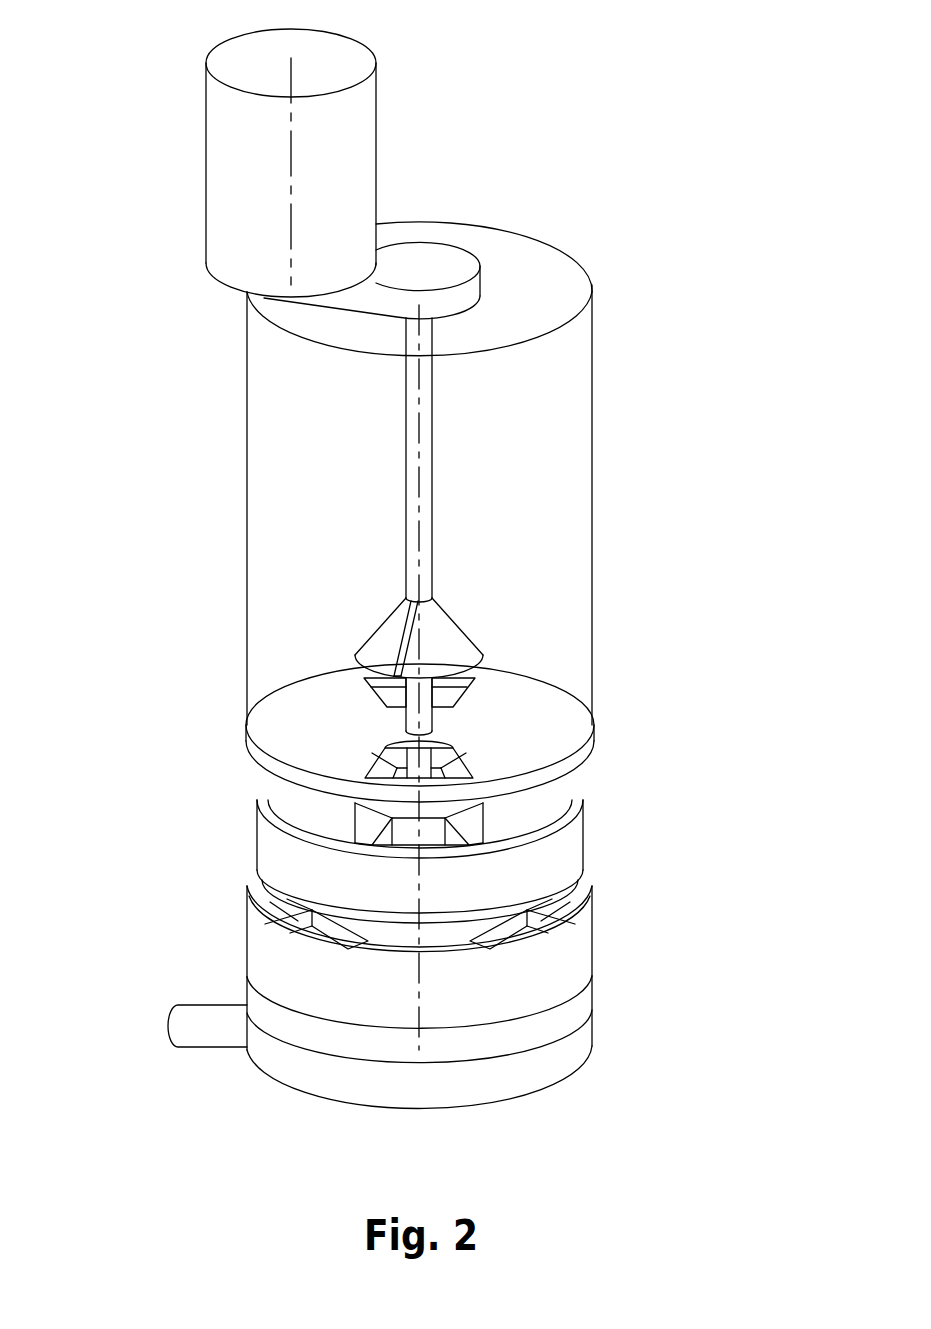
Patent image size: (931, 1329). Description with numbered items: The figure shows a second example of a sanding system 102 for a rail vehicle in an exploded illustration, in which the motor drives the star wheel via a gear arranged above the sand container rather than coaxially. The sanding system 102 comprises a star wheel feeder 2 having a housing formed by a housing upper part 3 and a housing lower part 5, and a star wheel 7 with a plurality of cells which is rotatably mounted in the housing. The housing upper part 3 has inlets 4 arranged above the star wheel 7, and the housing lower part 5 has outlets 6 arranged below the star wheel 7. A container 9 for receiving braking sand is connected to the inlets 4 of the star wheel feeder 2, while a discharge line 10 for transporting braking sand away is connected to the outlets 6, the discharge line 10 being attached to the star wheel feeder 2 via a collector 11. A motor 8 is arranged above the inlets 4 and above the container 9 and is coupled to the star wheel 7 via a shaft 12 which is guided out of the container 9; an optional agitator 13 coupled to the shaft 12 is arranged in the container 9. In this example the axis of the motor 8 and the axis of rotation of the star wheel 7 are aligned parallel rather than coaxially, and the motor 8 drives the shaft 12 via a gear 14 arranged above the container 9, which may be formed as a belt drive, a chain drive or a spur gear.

The sanding system 102 is at (680, 135).
The motor 8 is at (358, 128).
The gear 14 is at (430, 265).
The container 9 is at (578, 525).
The shaft 12 is at (425, 512).
The agitator 13 is at (453, 638).
The inlets 4 is at (387, 697).
The star wheel feeder 2 is at (162, 680).
The housing upper part 3 is at (270, 737).
The star wheel 7 is at (565, 857).
The outlets 6 is at (263, 890).
The housing lower part 5 is at (258, 965).
The discharge line 10 is at (208, 1037).
The collector 11 is at (568, 1068).